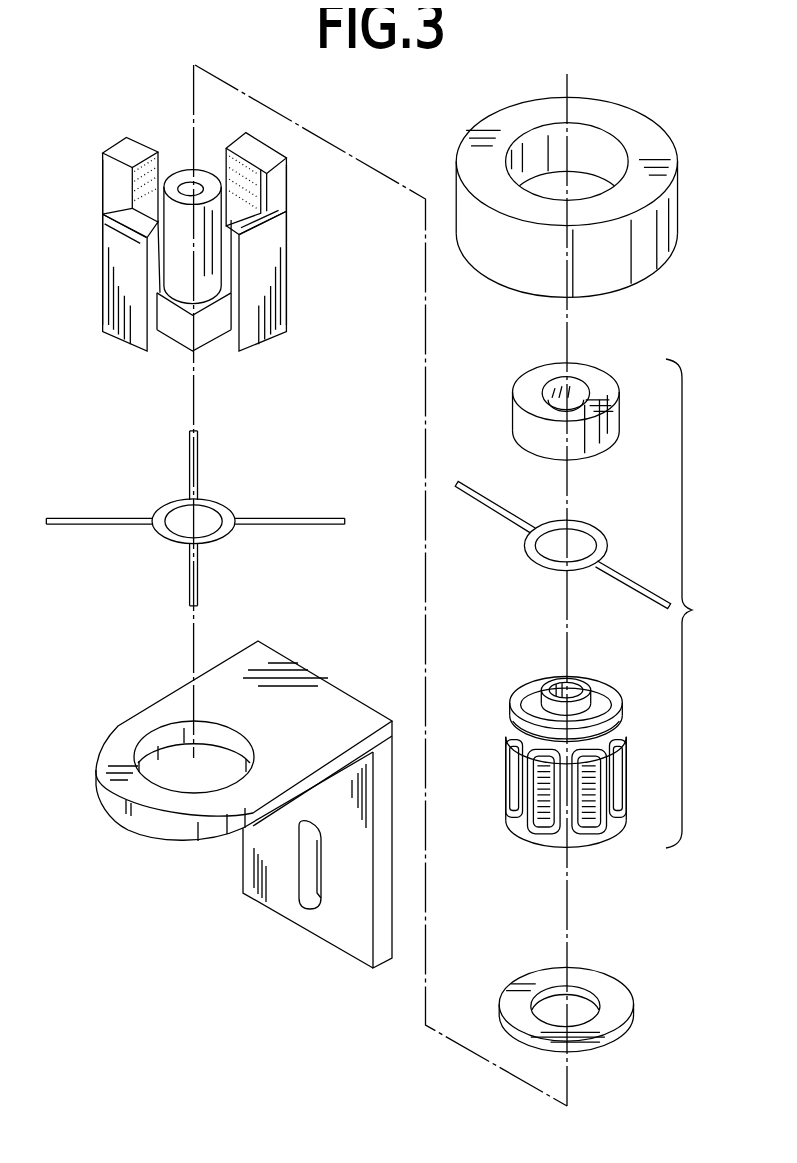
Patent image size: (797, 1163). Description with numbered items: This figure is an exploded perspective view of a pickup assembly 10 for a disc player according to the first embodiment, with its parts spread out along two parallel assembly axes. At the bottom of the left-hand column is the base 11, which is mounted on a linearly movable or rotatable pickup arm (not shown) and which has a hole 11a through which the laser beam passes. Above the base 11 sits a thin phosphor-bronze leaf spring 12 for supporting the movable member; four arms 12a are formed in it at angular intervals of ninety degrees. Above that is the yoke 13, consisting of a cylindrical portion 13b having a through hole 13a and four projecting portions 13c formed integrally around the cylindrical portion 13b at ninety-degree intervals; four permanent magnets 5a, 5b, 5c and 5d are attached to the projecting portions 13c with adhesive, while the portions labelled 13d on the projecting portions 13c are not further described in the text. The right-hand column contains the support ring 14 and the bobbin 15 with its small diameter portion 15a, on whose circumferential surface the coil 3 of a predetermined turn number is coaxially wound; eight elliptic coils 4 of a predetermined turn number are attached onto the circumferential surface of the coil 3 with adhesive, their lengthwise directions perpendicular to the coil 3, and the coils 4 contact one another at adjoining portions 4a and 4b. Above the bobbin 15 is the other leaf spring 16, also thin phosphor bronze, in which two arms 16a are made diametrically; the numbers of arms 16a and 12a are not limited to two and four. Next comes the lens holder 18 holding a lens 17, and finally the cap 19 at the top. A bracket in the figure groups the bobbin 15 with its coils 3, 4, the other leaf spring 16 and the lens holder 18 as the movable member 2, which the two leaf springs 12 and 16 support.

The electromagnetic drive unit 2 is at (696, 603).
The coil 3 is at (607, 822).
The elliptic coils 4 is at (577, 838).
The adjoining portion 4a is at (510, 753).
The adjoining portion 4b is at (585, 838).
The permanent magnet 5a is at (229, 160).
The permanent magnet 5b is at (138, 160).
The permanent magnet 5c is at (123, 246).
The permanent magnet 5d is at (268, 233).
The pickup assembly 10 is at (624, 895).
The base 11 is at (290, 908).
The hole 11a is at (215, 730).
The leaf spring 12 is at (217, 509).
The arms 12a is at (102, 527).
The yoke 13 is at (112, 352).
The through hole 13a is at (187, 187).
The cylindrical portion 13b is at (185, 285).
The projecting portions 13c is at (107, 191).
The bobbin shoulder 13d is at (123, 148).
The support ring 14 is at (622, 1012).
The bobbin 15 is at (598, 701).
The small diameter portion 15a is at (575, 681).
The other leaf spring 16 is at (600, 541).
The arms 16a is at (487, 500).
The lens 17 is at (548, 385).
The lens holder 18 is at (605, 440).
The cap 19 is at (662, 255).